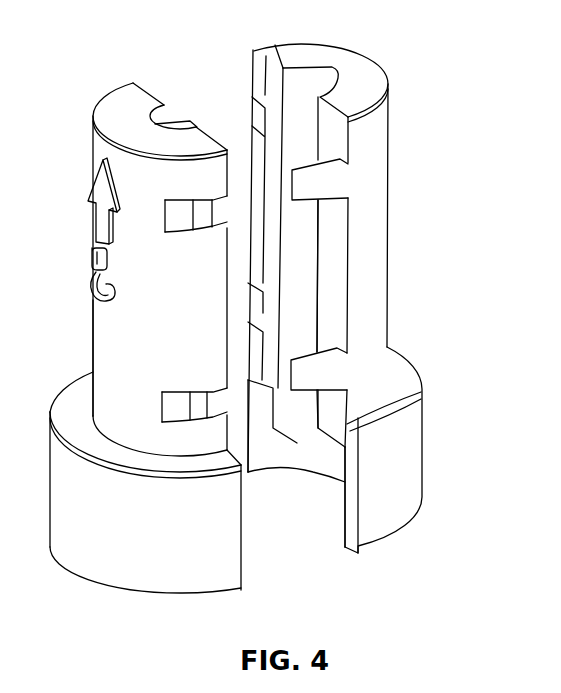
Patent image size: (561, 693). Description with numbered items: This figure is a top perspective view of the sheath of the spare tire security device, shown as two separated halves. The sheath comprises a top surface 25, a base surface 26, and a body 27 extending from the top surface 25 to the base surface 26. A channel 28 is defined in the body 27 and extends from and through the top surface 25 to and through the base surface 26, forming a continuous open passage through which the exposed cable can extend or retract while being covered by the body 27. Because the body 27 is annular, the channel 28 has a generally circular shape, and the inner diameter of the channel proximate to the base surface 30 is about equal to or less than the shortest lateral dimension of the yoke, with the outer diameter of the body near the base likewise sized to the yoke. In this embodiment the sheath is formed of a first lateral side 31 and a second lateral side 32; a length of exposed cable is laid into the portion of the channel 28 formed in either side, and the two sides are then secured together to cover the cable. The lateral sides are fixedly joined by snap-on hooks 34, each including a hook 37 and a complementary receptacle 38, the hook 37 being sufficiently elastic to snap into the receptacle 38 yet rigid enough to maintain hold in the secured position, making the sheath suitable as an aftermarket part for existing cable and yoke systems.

The top surface 25 is at (280, 48).
The base surface 26 is at (192, 593).
The body 27 is at (90, 152).
The channel 28 is at (309, 78).
The inner diameter of the channel proximate to the base surface 30 is at (340, 510).
The first lateral side 31 is at (90, 314).
The second lateral side 32 is at (387, 257).
The snap-on hooks 34 is at (193, 380).
The hook 37 is at (300, 200).
The receptacle 38 is at (197, 237).